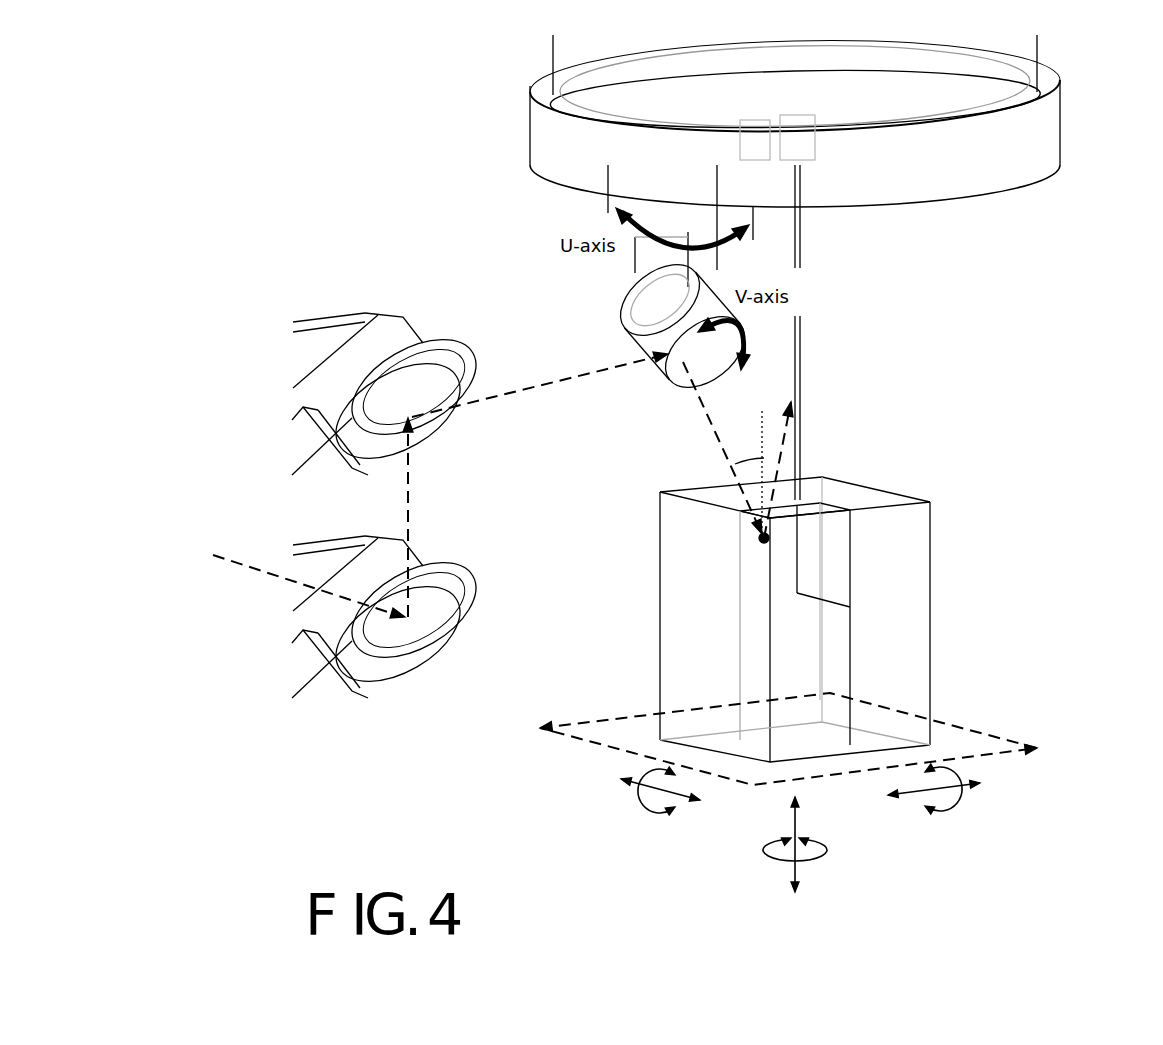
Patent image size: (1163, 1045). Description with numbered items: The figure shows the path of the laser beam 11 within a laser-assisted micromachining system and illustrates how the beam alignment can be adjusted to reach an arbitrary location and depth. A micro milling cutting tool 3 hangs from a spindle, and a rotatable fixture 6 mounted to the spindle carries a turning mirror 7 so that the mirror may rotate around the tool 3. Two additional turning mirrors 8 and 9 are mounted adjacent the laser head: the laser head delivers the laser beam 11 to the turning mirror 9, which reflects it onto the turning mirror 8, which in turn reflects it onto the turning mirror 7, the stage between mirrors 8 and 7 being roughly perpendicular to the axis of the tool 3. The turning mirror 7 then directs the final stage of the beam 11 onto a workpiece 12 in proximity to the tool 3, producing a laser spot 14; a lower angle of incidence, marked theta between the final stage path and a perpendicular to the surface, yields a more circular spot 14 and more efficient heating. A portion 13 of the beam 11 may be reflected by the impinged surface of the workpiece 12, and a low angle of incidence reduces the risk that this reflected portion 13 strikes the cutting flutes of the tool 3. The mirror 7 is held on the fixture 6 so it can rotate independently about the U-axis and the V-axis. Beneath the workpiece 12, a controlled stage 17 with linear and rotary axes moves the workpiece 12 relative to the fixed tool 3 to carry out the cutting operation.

The cutting tool 3 is at (800, 355).
The rotatable fixture 6 is at (995, 152).
The turning mirror 7 is at (645, 304).
The turning mirror 8 is at (377, 389).
The turning mirror 9 is at (427, 653).
The laser beam 11 is at (545, 388).
The workpiece 12 is at (910, 692).
The reflected portion of the laser beam 13 is at (783, 453).
The laser spot 14 is at (766, 537).
The controlled stage 17 is at (590, 738).